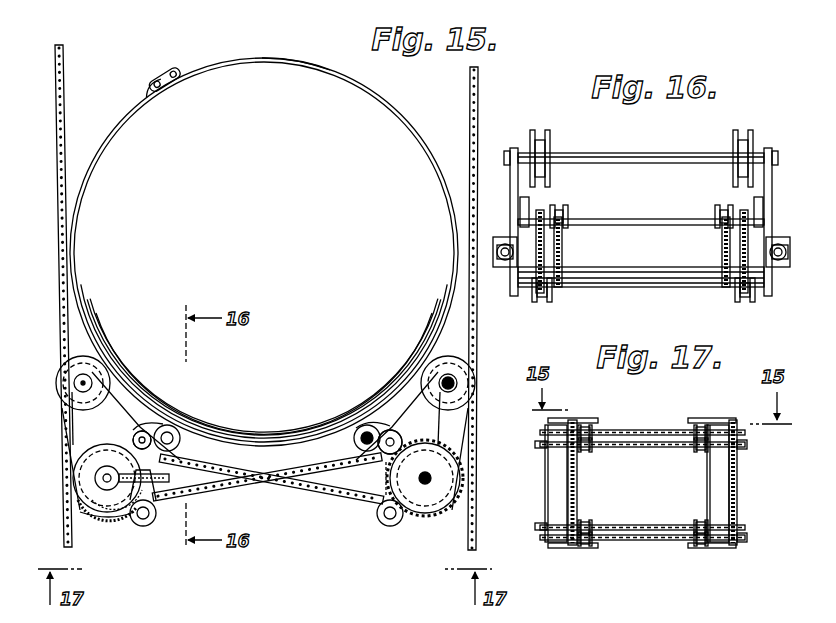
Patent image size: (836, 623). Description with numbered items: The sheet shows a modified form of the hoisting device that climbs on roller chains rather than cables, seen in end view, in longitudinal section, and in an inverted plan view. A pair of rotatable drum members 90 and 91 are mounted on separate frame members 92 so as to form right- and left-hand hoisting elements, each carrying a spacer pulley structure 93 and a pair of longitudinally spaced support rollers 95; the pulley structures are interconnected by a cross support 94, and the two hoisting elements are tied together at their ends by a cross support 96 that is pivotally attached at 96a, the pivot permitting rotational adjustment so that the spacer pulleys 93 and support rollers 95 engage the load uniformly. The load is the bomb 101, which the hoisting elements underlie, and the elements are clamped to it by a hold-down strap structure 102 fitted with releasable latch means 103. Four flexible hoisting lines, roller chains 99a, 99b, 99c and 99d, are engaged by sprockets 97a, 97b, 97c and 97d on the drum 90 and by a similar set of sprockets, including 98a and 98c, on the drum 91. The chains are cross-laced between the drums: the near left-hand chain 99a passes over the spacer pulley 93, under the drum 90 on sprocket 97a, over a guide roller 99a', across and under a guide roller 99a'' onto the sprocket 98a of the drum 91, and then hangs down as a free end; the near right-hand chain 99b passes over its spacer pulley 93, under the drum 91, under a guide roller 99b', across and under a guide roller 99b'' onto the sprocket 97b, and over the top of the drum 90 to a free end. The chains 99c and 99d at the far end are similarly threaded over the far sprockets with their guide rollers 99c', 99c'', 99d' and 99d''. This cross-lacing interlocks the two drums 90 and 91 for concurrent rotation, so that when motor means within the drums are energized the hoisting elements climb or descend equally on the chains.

In FIG. 15, the drum member 90 is at (100, 516).
In FIG. 16, the drum member 90 is at (644, 262).
In FIG. 17, the drum member 90 is at (568, 490).
In FIG. 15, the drum member 91 is at (415, 522).
In FIG. 17, the drum member 91 is at (713, 487).
In FIG. 15, the frame member 92 is at (265, 441).
In FIG. 16, the frame member 92 is at (513, 170).
In FIG. 17, the frame member 92 is at (583, 418).
In FIG. 15, the spacer pulley structure 93 is at (66, 388).
In FIG. 16, the spacer pulley structure 93 is at (542, 147).
In FIG. 16, the cross support 94 is at (633, 157).
In FIG. 15, the support roller 95 is at (180, 433).
In FIG. 16, the support roller 95 is at (532, 203).
In FIG. 15, the cross support 96 is at (158, 515).
In FIG. 16, the cross support 96 is at (497, 238).
In FIG. 15, the pivotal attachment 96a is at (97, 478).
In FIG. 16, the pivotal attachment 96a is at (500, 274).
In FIG. 15, the sprocket 97a is at (175, 452).
In FIG. 16, the sprocket 97a is at (544, 242).
In FIG. 16, the sprocket 97b is at (563, 255).
In FIG. 17, the sprocket 97b is at (562, 448).
In FIG. 16, the sprocket 97c is at (724, 241).
In FIG. 16, the sprocket 97d is at (723, 260).
In FIG. 17, the sprocket 97d is at (560, 523).
In FIG. 15, the sprocket 98a is at (385, 476).
In FIG. 17, the sprocket 98a is at (748, 442).
In FIG. 17, the sprocket 98c is at (737, 542).
In FIG. 15, the roller chain 99a is at (237, 305).
In FIG. 17, the roller chain 99a is at (622, 426).
In FIG. 16, the guide roller 99a' is at (564, 300).
In FIG. 17, the guide roller 99a' is at (619, 419).
In FIG. 15, the guide roller 99a'' is at (378, 415).
In FIG. 17, the guide roller 99a'' is at (689, 419).
In FIG. 15, the roller chain 99b is at (247, 308).
In FIG. 17, the roller chain 99b is at (640, 454).
In FIG. 15, the guide roller 99b' is at (374, 526).
In FIG. 17, the guide roller 99b' is at (686, 455).
In FIG. 15, the guide roller 99b'' is at (163, 413).
In FIG. 16, the guide roller 99b'' is at (589, 206).
In FIG. 17, the guide roller 99b'' is at (608, 456).
In FIG. 17, the roller chain 99c is at (646, 541).
In FIG. 16, the guide roller 99c' is at (758, 305).
In FIG. 17, the guide roller 99c' is at (609, 551).
In FIG. 17, the guide roller 99c'' is at (676, 558).
In FIG. 17, the roller chain 99d is at (640, 516).
In FIG. 17, the guide roller 99d' is at (683, 519).
In FIG. 16, the guide roller 99d'' is at (698, 212).
In FIG. 17, the guide roller 99d'' is at (608, 519).
In FIG. 15, the bomb 101 is at (264, 252).
In FIG. 15, the hold-down strap structure 102 is at (318, 61).
In FIG. 15, the releasable latch means 103 is at (170, 76).